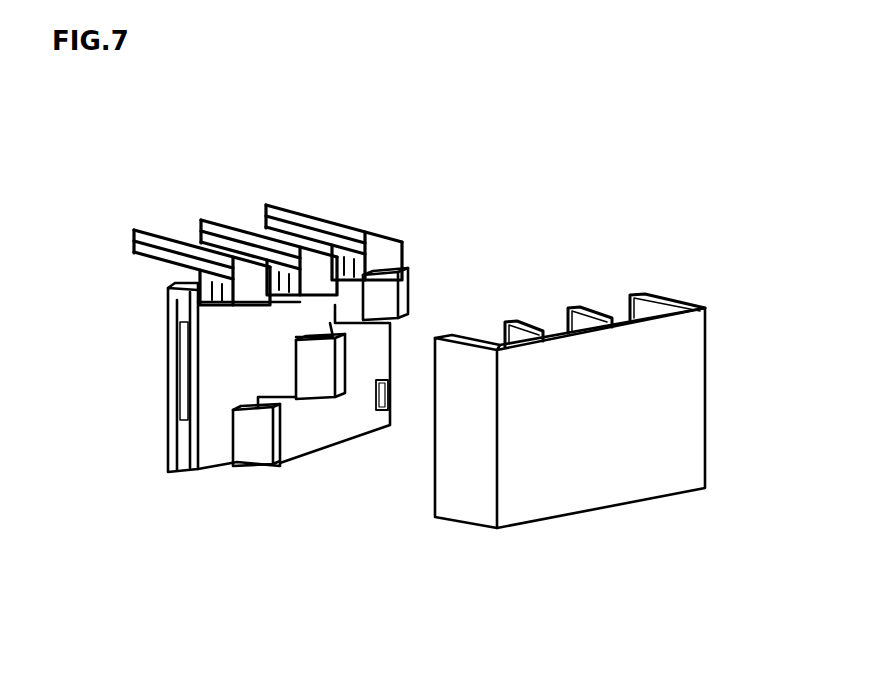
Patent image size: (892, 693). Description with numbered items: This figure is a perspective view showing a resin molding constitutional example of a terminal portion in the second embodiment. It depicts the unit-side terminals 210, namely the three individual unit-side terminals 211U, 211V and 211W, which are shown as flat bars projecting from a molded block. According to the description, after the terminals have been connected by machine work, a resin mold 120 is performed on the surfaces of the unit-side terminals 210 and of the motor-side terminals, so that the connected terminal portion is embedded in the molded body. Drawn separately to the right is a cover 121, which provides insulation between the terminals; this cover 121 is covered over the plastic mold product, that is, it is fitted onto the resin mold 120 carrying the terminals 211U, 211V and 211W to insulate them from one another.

The unit-side terminals 210 is at (98, 201).
The resin mold 120 is at (240, 382).
The cover 121 is at (633, 503).
The unit-side terminal 211U is at (148, 228).
The unit-side terminal 211V is at (243, 217).
The unit-side terminal 211W is at (378, 218).